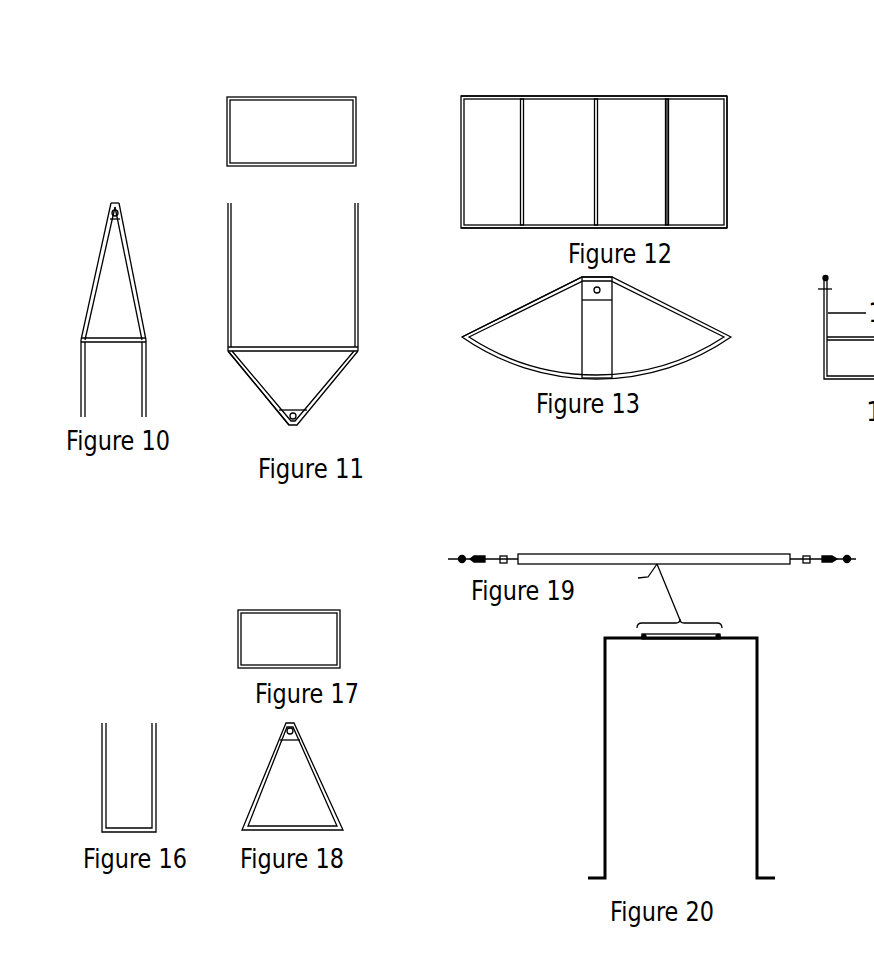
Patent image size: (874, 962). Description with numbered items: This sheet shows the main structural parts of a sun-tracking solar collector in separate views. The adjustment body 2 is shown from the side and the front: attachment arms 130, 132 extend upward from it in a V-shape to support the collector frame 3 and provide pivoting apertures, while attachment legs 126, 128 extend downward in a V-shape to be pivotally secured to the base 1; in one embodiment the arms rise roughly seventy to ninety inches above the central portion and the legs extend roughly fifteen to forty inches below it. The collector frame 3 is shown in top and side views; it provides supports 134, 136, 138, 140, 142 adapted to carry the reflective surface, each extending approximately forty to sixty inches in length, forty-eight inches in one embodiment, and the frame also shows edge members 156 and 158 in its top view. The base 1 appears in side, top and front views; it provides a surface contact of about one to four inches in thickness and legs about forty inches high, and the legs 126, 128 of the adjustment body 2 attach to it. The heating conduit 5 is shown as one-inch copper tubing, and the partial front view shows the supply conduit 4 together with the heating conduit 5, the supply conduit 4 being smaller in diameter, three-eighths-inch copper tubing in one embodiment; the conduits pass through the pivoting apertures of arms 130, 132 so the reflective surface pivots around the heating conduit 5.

In FIG. 16, the base 1 is at (101, 722).
In FIG. 17, the base 1 is at (295, 608).
In FIG. 18, the base 1 is at (328, 793).
In FIG. 10, the adjustment body 2 is at (116, 305).
In FIG. 11, the adjustment body 2 is at (272, 96).
In FIG. 12, the collector frame 3 is at (713, 96).
In FIG. 13, the collector frame 3 is at (667, 303).
In FIG. 14, the collector frame 3 is at (848, 382).
In FIG. 20, the supply conduit 4 is at (605, 728).
In FIG. 19, the heating conduit 5 is at (692, 553).
In FIG. 20, the heating conduit 5 is at (705, 643).
In FIG. 10, the attachment leg 126 is at (81, 372).
In FIG. 11, the attachment leg 126 is at (257, 388).
In FIG. 10, the attachment leg 128 is at (147, 378).
In FIG. 10, the attachment arm 130 is at (100, 233).
In FIG. 11, the attachment arm 130 is at (231, 248).
In FIG. 10, the attachment arm 132 is at (123, 225).
In FIG. 11, the attachment arm 132 is at (356, 270).
In FIG. 12, the support 134 is at (465, 156).
In FIG. 12, the support 136 is at (524, 153).
In FIG. 12, the support 138 is at (598, 150).
In FIG. 12, the support 140 is at (669, 113).
In FIG. 12, the support 142 is at (727, 118).
In FIG. 12, the bottom edge 156 is at (716, 228).
In FIG. 13, the bottom edge 156 is at (520, 307).
In FIG. 12, the top edge 158 is at (488, 95).